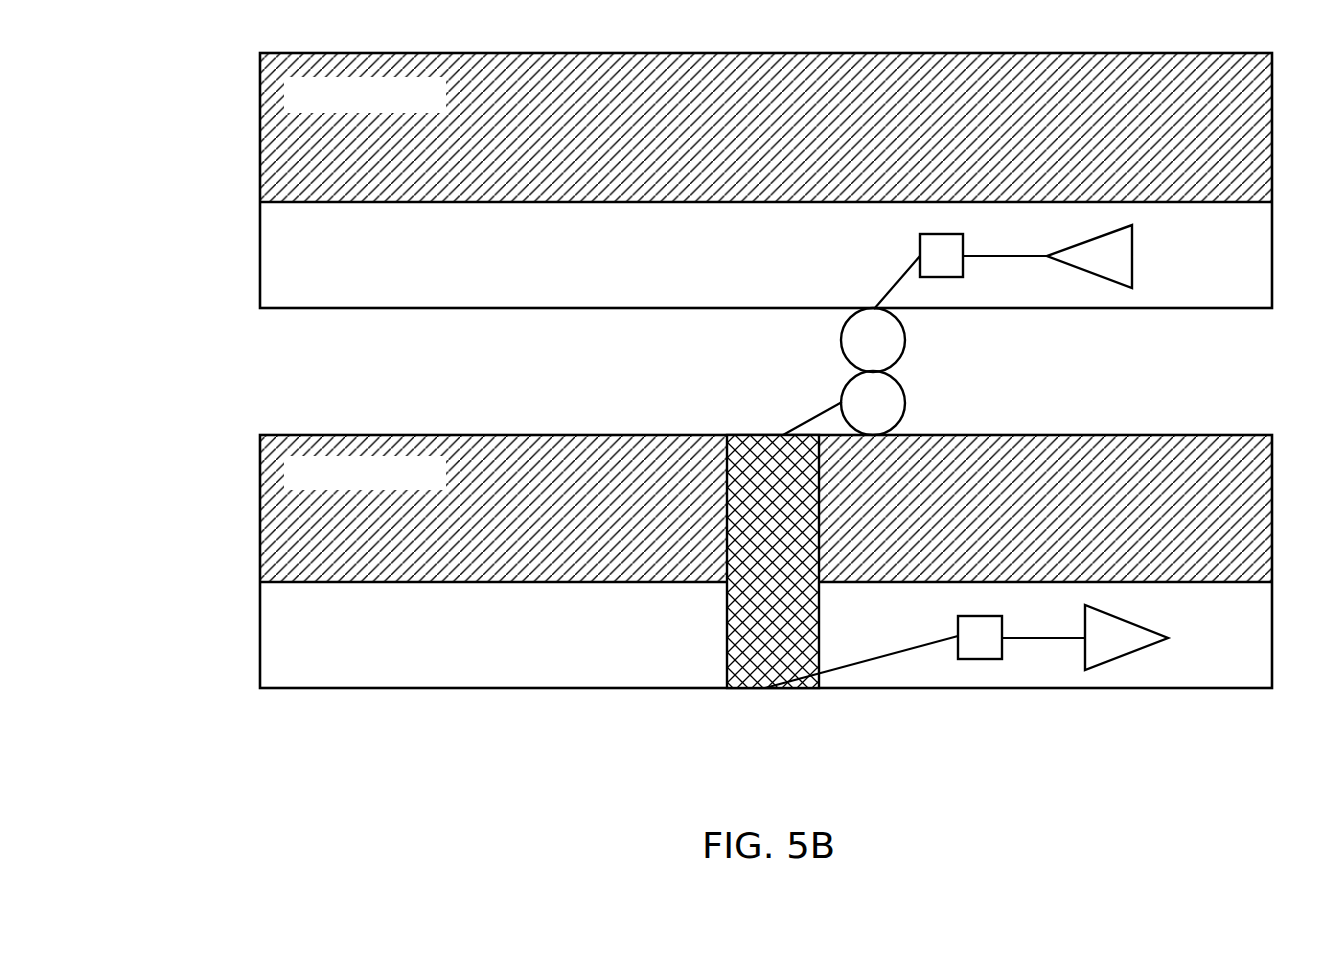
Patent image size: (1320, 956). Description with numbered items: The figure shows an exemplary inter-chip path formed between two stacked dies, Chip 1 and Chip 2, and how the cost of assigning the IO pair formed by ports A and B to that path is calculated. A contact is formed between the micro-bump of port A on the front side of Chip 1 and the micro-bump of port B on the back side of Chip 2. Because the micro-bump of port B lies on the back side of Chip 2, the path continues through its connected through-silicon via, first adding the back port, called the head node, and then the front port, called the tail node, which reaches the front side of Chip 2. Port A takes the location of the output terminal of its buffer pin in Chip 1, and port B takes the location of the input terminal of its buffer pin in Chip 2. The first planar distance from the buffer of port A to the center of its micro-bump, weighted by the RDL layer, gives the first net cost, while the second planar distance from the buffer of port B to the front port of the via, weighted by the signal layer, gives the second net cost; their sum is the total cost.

The chip 1 Chip 1 is at (182, 194).
The chip 2 Chip 2 is at (182, 574).